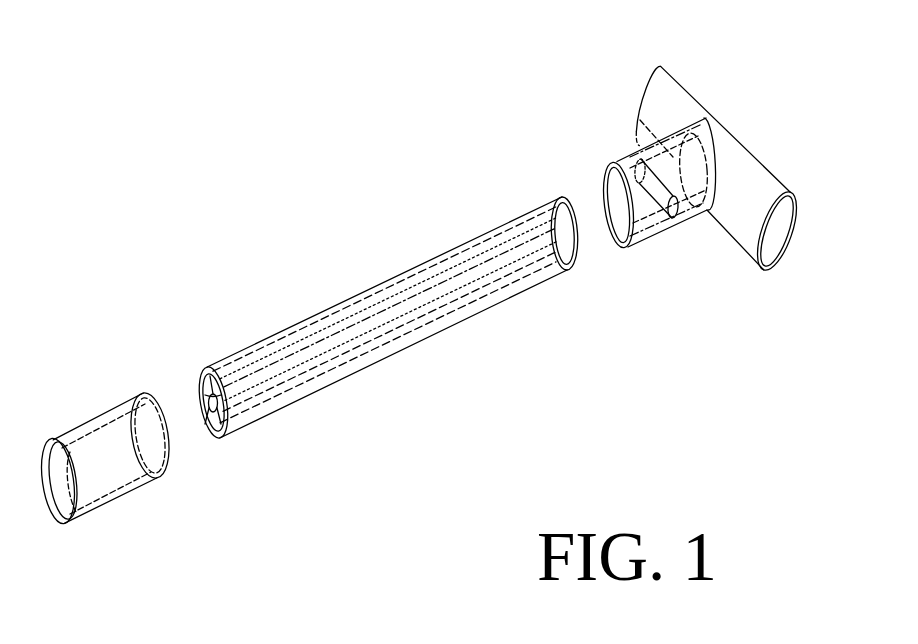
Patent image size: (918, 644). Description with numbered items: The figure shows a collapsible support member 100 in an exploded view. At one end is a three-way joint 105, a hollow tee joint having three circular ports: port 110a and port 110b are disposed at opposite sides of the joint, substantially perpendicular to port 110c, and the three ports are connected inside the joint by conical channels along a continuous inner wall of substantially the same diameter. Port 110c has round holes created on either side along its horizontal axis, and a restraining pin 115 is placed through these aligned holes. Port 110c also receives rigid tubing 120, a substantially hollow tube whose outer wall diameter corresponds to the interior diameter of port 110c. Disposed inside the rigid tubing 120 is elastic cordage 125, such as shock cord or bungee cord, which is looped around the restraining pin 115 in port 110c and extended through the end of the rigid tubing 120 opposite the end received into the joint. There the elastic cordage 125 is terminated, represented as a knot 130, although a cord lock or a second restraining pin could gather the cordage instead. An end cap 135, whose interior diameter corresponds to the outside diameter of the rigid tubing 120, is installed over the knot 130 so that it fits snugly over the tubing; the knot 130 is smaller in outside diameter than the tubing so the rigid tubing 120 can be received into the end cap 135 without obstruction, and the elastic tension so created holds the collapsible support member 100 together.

The collapsible support member 100 is at (240, 159).
The three-way joint 105 is at (733, 127).
The port 110a is at (790, 260).
The port 110b is at (643, 83).
The port 110c is at (604, 180).
The restraining pin 115 is at (674, 218).
The rigid tubing 120 is at (453, 247).
The elastic cordage 125 is at (338, 367).
The knot 130 is at (203, 378).
The end cap 135 is at (110, 503).